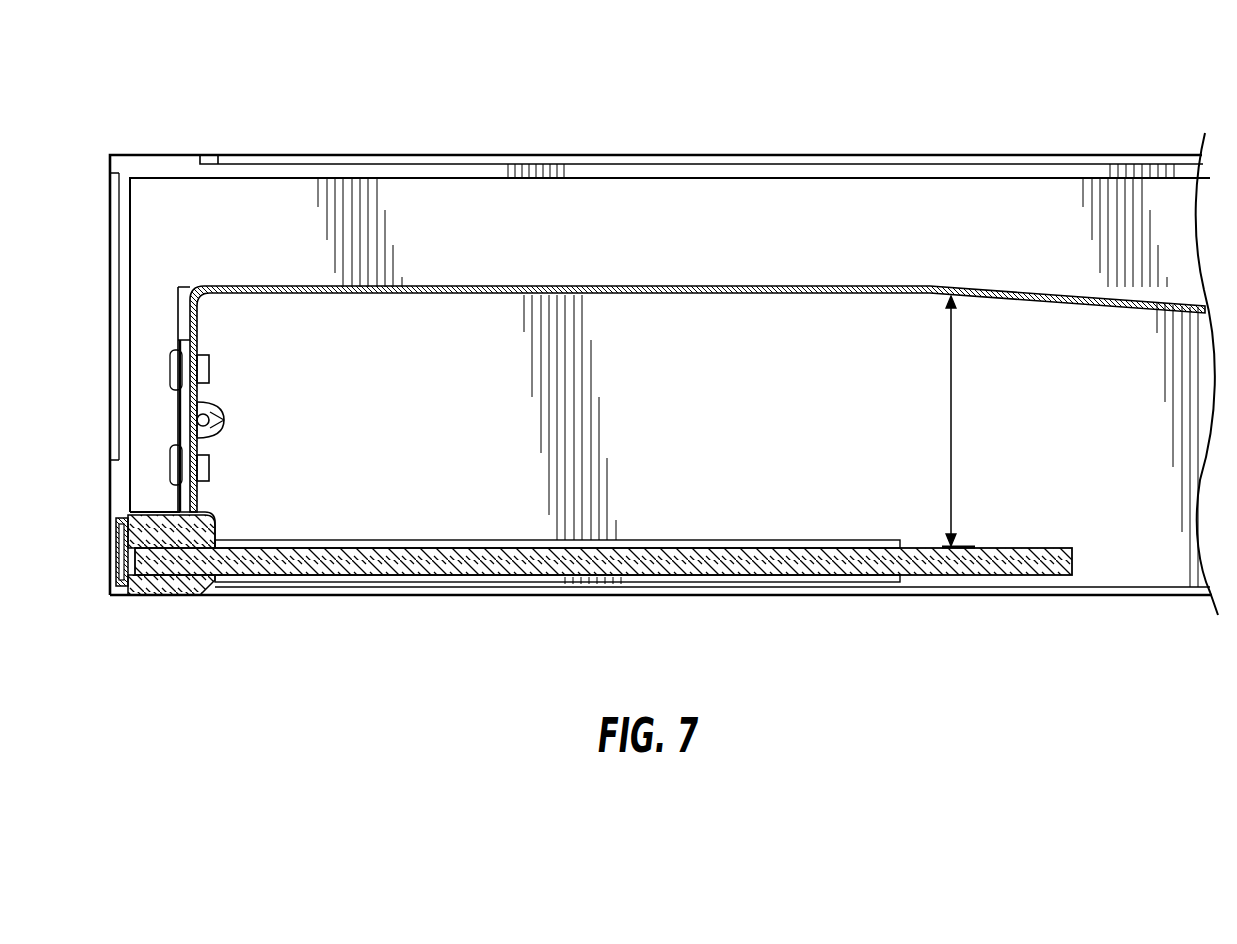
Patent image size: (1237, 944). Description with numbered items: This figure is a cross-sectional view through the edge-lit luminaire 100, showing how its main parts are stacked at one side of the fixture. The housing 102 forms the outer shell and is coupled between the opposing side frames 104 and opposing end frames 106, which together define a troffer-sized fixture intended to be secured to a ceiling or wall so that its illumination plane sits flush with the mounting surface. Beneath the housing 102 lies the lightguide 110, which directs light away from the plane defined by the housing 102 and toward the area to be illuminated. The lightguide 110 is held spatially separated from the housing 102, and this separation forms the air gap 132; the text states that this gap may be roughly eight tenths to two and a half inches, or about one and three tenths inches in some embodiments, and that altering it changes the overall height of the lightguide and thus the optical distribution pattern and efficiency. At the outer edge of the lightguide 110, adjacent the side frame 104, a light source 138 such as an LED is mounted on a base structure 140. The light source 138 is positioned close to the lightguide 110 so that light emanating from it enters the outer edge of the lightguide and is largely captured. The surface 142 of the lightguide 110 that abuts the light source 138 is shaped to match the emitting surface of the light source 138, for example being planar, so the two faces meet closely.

The luminaire 100 is at (312, 80).
The housing 102 is at (1054, 294).
The side frame 104 is at (188, 413).
The end frame 106 is at (713, 400).
The lightguide 110 is at (688, 566).
The air gap 132 is at (953, 402).
The light source 138 is at (145, 512).
The base structure 140 is at (118, 538).
The surface 142 is at (120, 578).